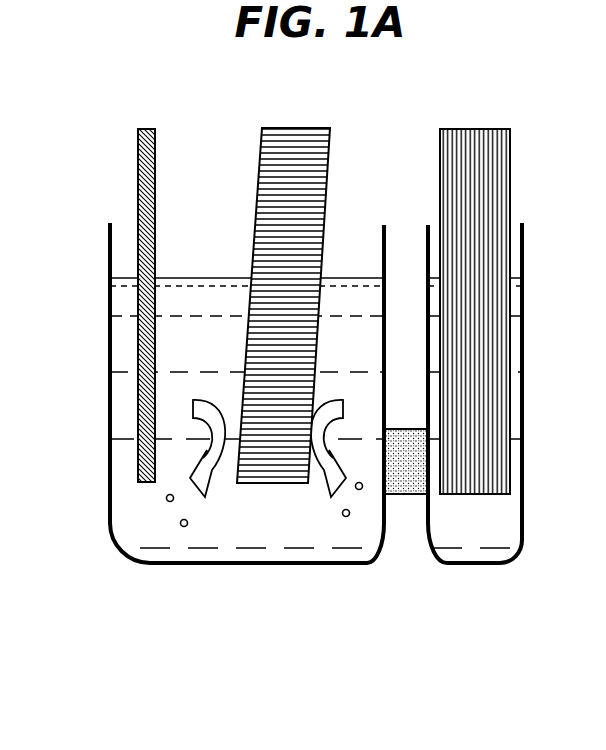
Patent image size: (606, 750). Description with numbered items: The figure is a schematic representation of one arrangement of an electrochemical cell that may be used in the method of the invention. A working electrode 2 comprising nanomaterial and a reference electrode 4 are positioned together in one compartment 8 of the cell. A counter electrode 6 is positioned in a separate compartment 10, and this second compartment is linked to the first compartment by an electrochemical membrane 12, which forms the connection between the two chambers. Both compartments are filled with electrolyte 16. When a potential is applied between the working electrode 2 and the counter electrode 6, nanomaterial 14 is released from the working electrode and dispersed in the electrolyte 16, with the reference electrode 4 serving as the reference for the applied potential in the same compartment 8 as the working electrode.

The working electrode 2 is at (293, 128).
The reference electrode 4 is at (146, 128).
The counter electrode 6 is at (472, 128).
The compartment 8 is at (293, 563).
The separate compartment 10 is at (478, 563).
The electrochemical membrane 12 is at (401, 497).
The nanomaterial 14 is at (184, 528).
The electrolyte 16 is at (118, 524).